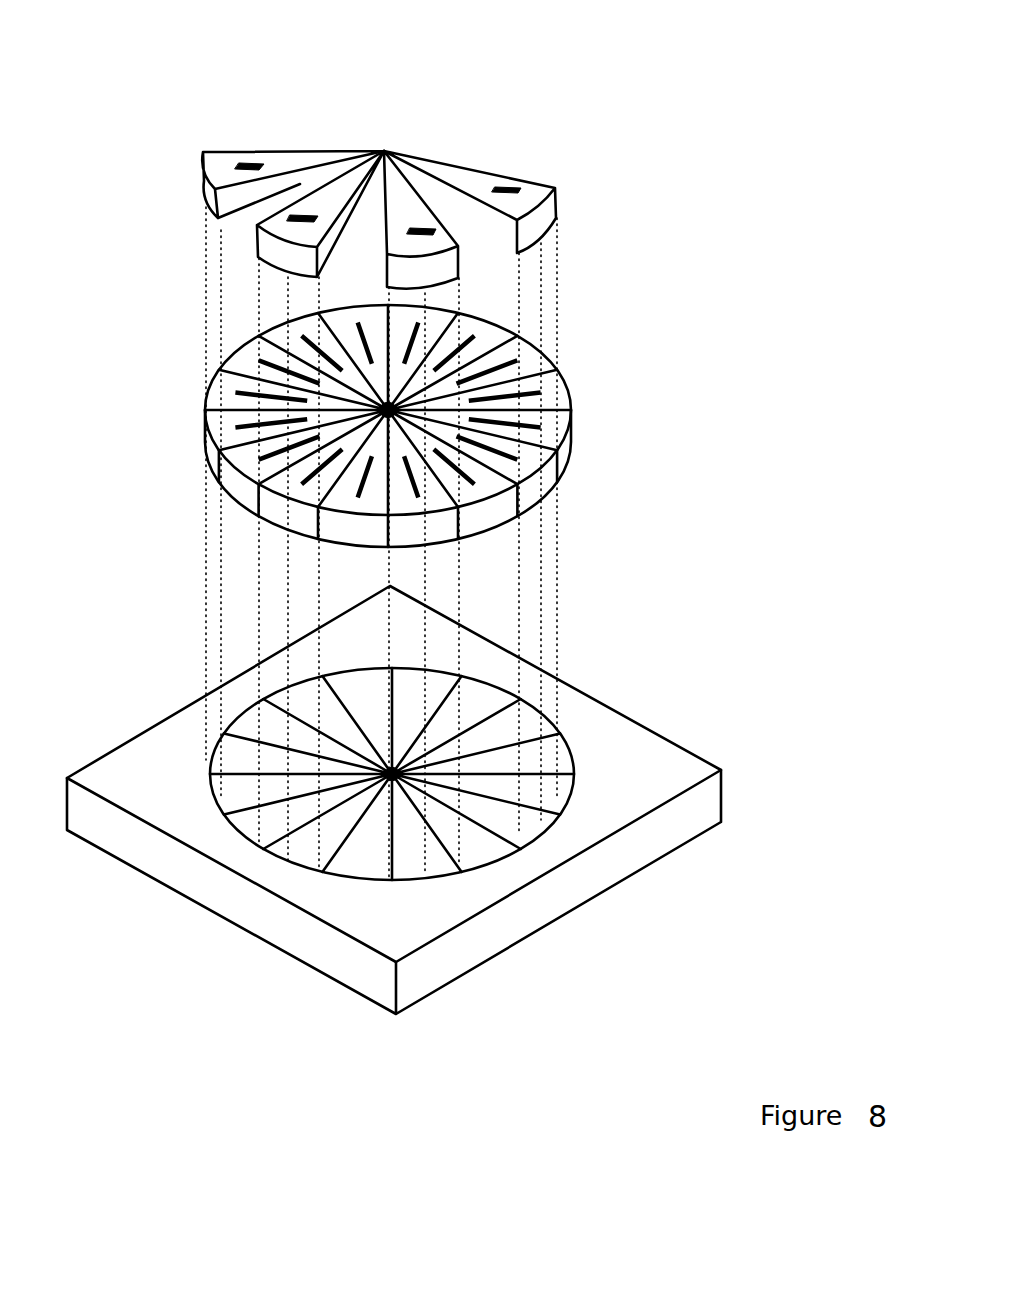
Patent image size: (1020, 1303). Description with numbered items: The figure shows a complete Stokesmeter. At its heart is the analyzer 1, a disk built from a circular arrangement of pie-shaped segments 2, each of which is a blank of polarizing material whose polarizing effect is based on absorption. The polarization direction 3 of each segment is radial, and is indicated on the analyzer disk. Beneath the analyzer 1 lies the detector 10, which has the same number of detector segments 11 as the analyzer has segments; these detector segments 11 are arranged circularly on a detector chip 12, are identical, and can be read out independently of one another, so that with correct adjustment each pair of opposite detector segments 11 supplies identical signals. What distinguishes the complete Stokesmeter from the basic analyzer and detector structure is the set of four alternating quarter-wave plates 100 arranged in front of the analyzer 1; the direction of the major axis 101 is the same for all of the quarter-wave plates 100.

The analyzer 1 is at (170, 378).
The segments 2 is at (248, 455).
The polarization direction 3 is at (513, 452).
The detector 10 is at (717, 745).
The detector segments 11 is at (548, 760).
The detector chip 12 is at (617, 816).
The λ/4 plates 100 is at (222, 167).
The major axis 101 is at (422, 230).